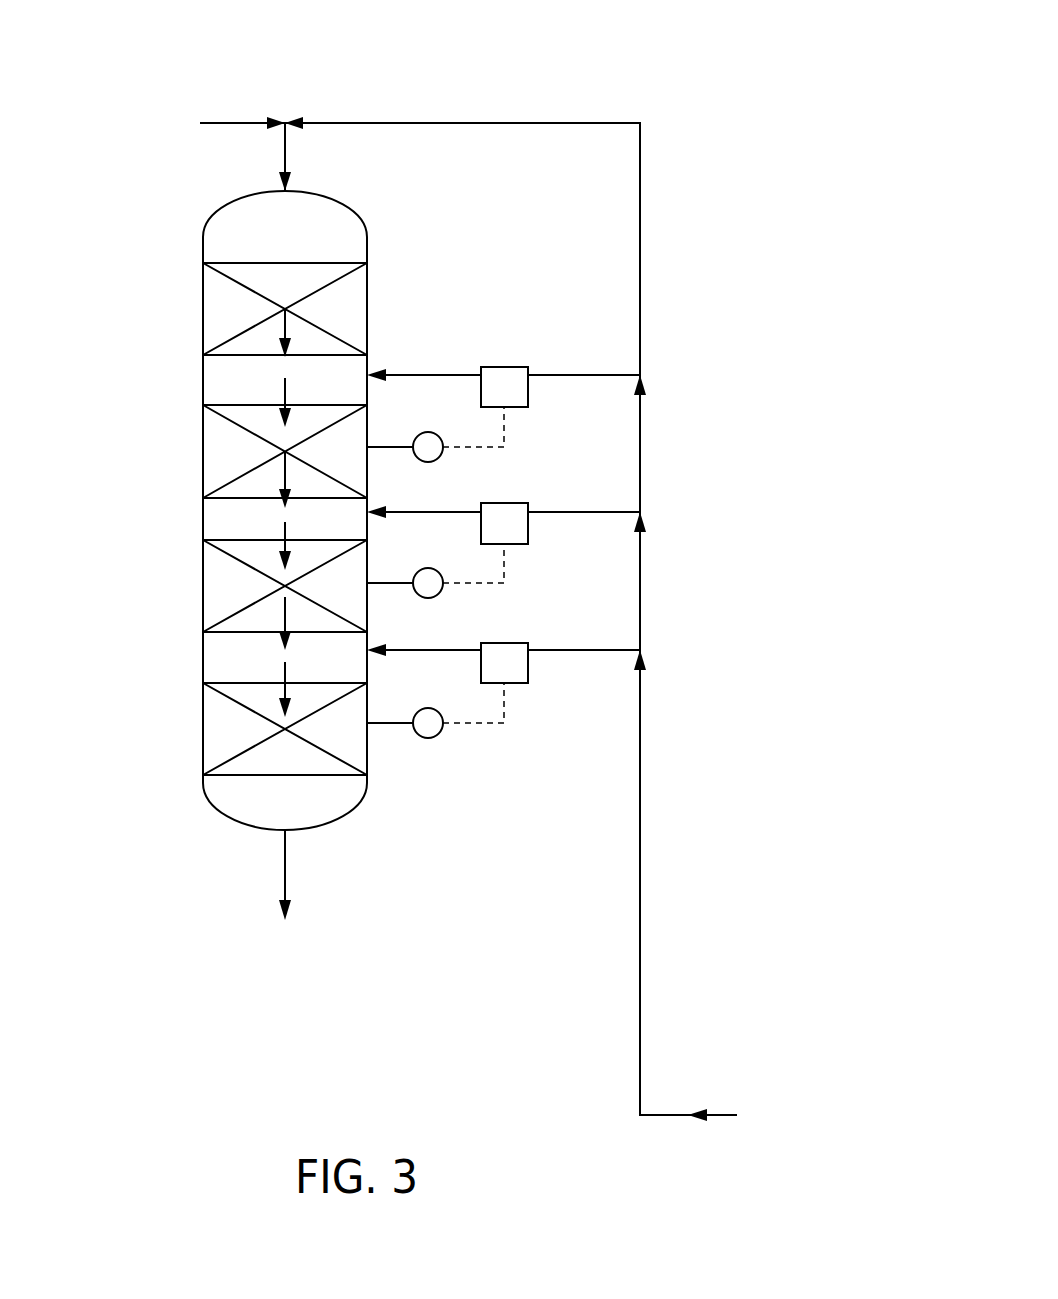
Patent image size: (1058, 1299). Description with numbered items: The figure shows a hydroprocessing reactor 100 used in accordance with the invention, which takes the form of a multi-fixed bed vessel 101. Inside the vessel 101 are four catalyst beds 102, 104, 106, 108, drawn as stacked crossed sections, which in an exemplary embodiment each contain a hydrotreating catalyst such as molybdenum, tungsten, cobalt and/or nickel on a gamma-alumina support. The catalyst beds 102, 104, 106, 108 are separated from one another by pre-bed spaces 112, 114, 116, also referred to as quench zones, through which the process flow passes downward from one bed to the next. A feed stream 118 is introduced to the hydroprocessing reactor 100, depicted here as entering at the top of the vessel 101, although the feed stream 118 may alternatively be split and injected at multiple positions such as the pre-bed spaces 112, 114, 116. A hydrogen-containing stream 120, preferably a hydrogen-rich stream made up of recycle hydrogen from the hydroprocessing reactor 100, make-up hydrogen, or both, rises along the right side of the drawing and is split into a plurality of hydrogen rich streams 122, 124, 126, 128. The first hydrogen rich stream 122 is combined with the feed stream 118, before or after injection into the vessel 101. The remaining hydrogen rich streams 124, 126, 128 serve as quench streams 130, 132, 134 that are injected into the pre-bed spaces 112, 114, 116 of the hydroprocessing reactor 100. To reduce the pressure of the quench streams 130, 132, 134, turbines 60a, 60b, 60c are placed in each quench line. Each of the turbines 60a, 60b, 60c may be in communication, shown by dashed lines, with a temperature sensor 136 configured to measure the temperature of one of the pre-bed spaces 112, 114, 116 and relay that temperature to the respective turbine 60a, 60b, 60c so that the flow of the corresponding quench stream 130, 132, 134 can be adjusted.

The hydroprocessing reactor 100 is at (708, 41).
The multi-fixed bed vessel 101 is at (341, 201).
The catalyst bed 102 is at (218, 305).
The catalyst bed 104 is at (218, 452).
The catalyst bed 106 is at (218, 590).
The catalyst bed 108 is at (218, 730).
The pre-bed space 112 is at (218, 401).
The pre-bed space 114 is at (218, 525).
The pre-bed space 116 is at (218, 665).
The feed stream 118 is at (229, 121).
The hydrogen-containing stream 120 is at (640, 910).
The first hydrogen rich stream 122 is at (640, 290).
The hydrogen rich stream 124 is at (594, 378).
The hydrogen rich stream 126 is at (597, 518).
The hydrogen rich stream 128 is at (585, 655).
The quench stream 130 is at (424, 372).
The quench stream 132 is at (411, 510).
The quench stream 134 is at (413, 648).
The temperature sensor 136 is at (482, 449).
The turbine 60a is at (519, 642).
The turbine 60b is at (523, 502).
The turbine 60c is at (503, 365).